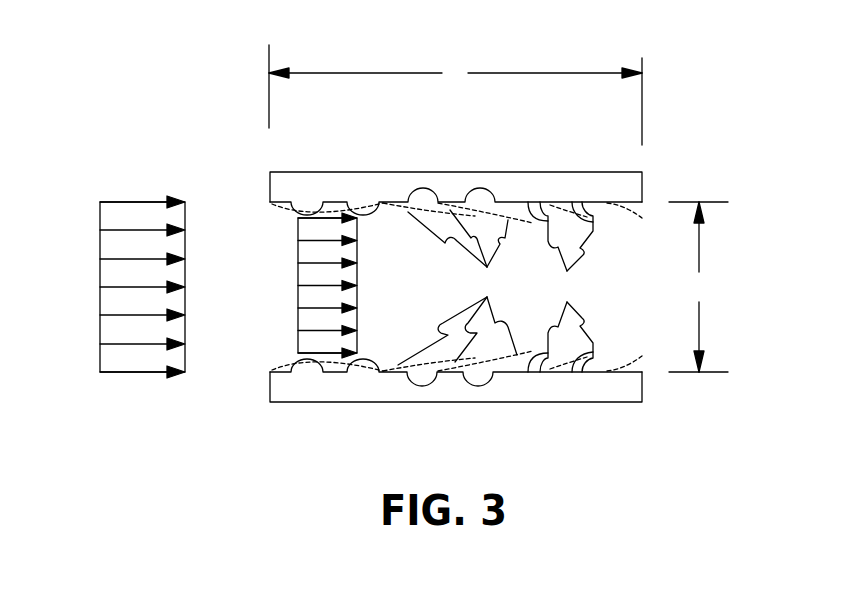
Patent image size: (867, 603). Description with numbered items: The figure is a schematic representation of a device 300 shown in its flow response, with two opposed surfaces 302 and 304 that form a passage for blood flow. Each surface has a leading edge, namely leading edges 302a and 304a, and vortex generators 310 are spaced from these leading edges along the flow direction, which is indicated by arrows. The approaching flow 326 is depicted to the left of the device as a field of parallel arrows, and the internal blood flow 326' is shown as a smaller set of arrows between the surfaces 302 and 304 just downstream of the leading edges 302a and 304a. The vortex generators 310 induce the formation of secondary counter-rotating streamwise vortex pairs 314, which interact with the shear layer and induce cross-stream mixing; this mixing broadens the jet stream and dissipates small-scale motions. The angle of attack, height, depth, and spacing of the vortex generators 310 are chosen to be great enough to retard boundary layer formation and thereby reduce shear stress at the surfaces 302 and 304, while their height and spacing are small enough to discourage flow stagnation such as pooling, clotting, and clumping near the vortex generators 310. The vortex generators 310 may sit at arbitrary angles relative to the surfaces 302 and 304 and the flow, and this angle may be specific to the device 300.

The device 300 is at (147, 57).
The surface 302 is at (642, 172).
The leading edge 302a is at (268, 185).
The surface 304 is at (642, 402).
The leading edge 304a is at (270, 387).
The vortex generator 310 is at (560, 287).
The secondary counter-rotating streamwise vortex pairs 314 is at (457, 287).
The approaching flow 326 is at (132, 324).
The internal blood flow 326' is at (286, 285).